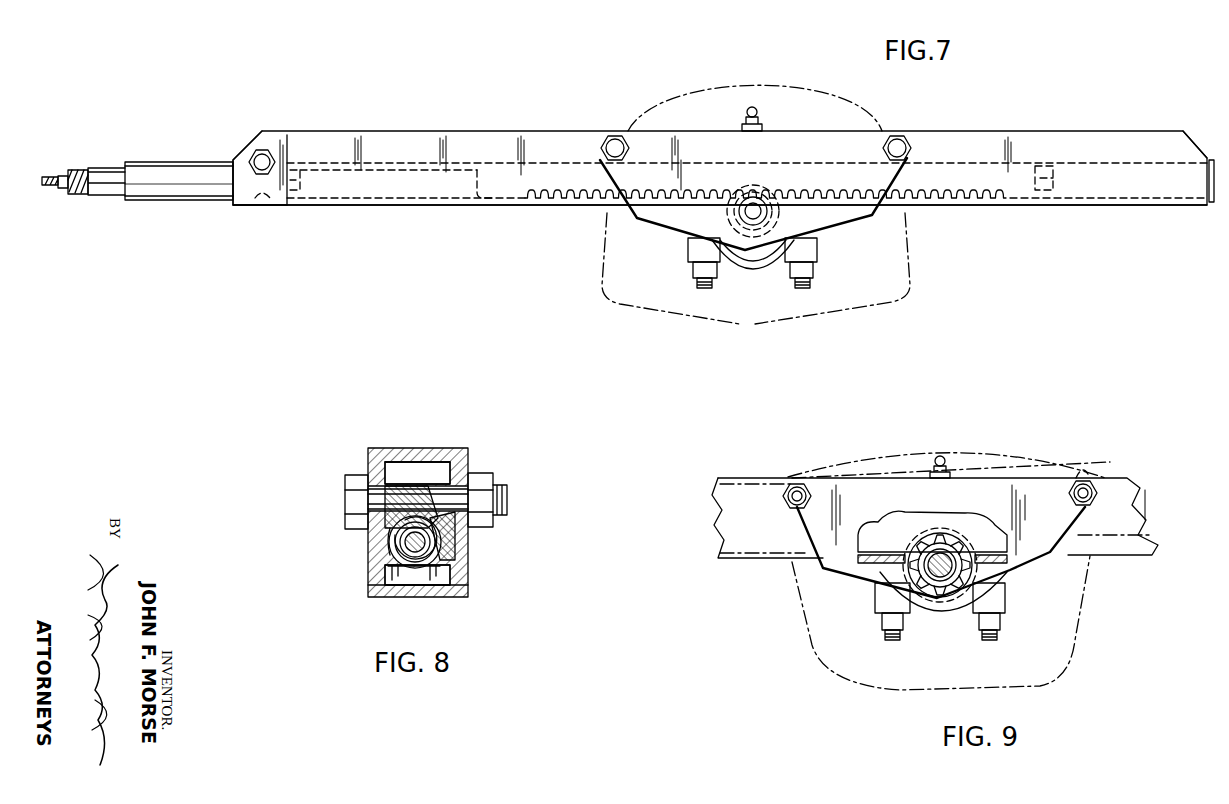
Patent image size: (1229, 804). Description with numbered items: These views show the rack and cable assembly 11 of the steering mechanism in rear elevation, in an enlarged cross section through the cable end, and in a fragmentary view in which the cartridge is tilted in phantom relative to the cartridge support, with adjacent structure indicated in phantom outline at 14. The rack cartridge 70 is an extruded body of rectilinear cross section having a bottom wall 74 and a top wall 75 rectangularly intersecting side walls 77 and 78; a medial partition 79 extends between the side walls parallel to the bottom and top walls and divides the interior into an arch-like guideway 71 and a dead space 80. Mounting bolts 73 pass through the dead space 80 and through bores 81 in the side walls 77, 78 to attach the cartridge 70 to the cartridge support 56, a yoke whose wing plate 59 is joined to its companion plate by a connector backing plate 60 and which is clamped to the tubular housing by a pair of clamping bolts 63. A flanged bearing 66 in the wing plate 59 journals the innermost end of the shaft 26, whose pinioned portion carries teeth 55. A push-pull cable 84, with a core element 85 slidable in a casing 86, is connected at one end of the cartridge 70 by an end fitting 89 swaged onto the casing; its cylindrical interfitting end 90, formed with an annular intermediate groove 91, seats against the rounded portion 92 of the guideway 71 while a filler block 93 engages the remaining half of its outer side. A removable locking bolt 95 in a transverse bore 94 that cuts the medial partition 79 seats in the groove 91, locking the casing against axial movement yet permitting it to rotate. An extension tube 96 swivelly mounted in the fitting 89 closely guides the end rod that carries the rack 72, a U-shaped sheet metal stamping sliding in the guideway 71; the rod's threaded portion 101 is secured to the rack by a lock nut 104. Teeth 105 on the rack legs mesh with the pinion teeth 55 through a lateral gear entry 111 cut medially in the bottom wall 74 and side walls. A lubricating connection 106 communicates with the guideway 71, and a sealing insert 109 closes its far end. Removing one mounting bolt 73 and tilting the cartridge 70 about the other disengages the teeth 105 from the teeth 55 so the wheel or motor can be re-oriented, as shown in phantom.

In FIG. 7, the steering assembly 11 is at (540, 103).
In FIG. 7, the outboard motor housing outline 14 is at (598, 283).
In FIG. 9, the outboard motor housing outline 14 is at (800, 665).
In FIG. 7, the shaft 26 is at (753, 218).
In FIG. 9, the shaft 26 is at (945, 572).
In FIG. 7, the teeth 55 is at (795, 224).
In FIG. 9, the teeth 55 is at (940, 580).
In FIG. 7, the cartridge support 56 is at (668, 230).
In FIG. 9, the cartridge support 56 is at (1022, 582).
In FIG. 7, the wing plate 59 is at (701, 131).
In FIG. 9, the wing plate 59 is at (890, 478).
In FIG. 9, the connector backing plate 60 is at (885, 564).
In FIG. 7, the clamping bolts 63 is at (803, 289).
In FIG. 9, the clamping bolts 63 is at (890, 642).
In FIG. 7, the flanged bearing 66 is at (739, 212).
In FIG. 7, the rack cartridge 70 is at (975, 133).
In FIG. 8, the rack cartridge 70 is at (470, 448).
In FIG. 9, the rack cartridge 70 is at (1112, 475).
In FIG. 7, the guideway 71 is at (480, 199).
In FIG. 8, the guideway 71 is at (460, 550).
In FIG. 7, the rack 72 is at (1022, 206).
In FIG. 9, the rack 72 is at (880, 535).
In FIG. 7, the mounting bolts 73 is at (615, 140).
In FIG. 9, the mounting bolts 73 is at (794, 500).
In FIG. 7, the bottom wall 74 is at (393, 206).
In FIG. 8, the bottom wall 74 is at (470, 597).
In FIG. 7, the top wall 75 is at (393, 131).
In FIG. 8, the top wall 75 is at (425, 449).
In FIG. 7, the side wall 77 is at (1130, 131).
In FIG. 8, the side wall 77 is at (396, 537).
In FIG. 9, the side wall 77 is at (752, 560).
In FIG. 8, the side wall 78 is at (463, 567).
In FIG. 8, the medial partition 79 is at (400, 490).
In FIG. 8, the dead space 80 is at (405, 470).
In FIG. 9, the bores 81 is at (1080, 466).
In FIG. 7, the push-pull cable 84 is at (111, 162).
In FIG. 7, the core element 85 is at (50, 174).
In FIG. 8, the core element 85 is at (430, 542).
In FIG. 7, the casing 86 is at (103, 193).
In FIG. 7, the end fitting 89 is at (183, 201).
In FIG. 8, the end fitting 89 is at (412, 575).
In FIG. 7, the interfitting end 90 is at (246, 204).
In FIG. 8, the interfitting end 90 is at (395, 510).
In FIG. 8, the annular intermediate groove 91 is at (440, 506).
In FIG. 8, the arched portion 92 is at (388, 537).
In FIG. 8, the filler block 93 is at (395, 572).
In FIG. 8, the bore 94 is at (455, 488).
In FIG. 7, the locking bolt 95 is at (268, 152).
In FIG. 8, the locking bolt 95 is at (508, 495).
In FIG. 8, the extension tube 96 is at (402, 548).
In FIG. 7, the threaded portion 101 is at (1060, 172).
In FIG. 7, the lock nut 104 is at (1042, 166).
In FIG. 7, the teeth 105 is at (580, 205).
In FIG. 9, the teeth 105 is at (950, 534).
In FIG. 7, the lubricating connection 106 is at (756, 111).
In FIG. 9, the lubricating connection 106 is at (940, 456).
In FIG. 7, the sealing insert 109 is at (1213, 207).
In FIG. 7, the lateral gear entry 111 is at (758, 192).
In FIG. 9, the lateral gear entry 111 is at (968, 552).